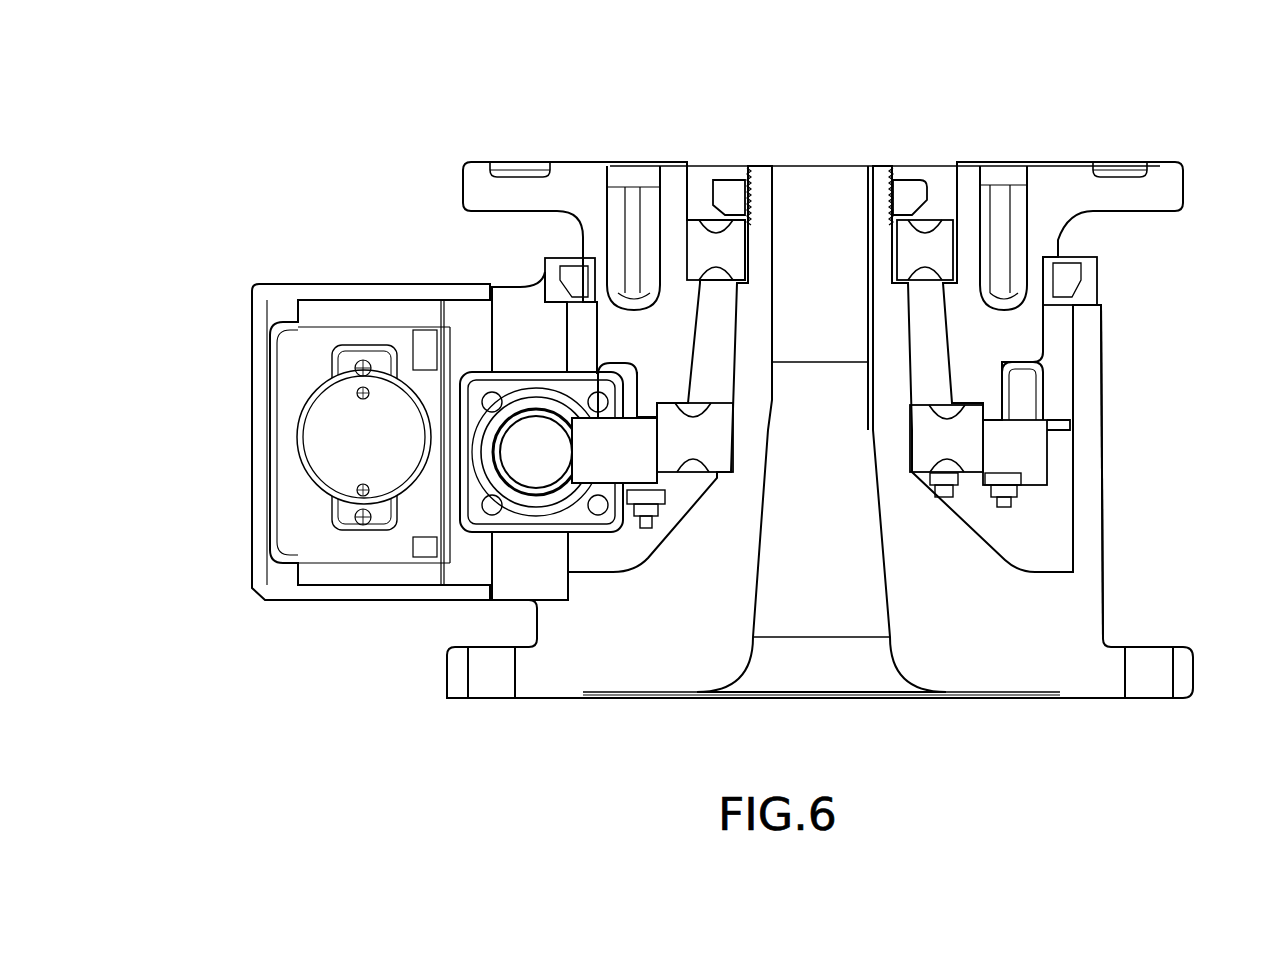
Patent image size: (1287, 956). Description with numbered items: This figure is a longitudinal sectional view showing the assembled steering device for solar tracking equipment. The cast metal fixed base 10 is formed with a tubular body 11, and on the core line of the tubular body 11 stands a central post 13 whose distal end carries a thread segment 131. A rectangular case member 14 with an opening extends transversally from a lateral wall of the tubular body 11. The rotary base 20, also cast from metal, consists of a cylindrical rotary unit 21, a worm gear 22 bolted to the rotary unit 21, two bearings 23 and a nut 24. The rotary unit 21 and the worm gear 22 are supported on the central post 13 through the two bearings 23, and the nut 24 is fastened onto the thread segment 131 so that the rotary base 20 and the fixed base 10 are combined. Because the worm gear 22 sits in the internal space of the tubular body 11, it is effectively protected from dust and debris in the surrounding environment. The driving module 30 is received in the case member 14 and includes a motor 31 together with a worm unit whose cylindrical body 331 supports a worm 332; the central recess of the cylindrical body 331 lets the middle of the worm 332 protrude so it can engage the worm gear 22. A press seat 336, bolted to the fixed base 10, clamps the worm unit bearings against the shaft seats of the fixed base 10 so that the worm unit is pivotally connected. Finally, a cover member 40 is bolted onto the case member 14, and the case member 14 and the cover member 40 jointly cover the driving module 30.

The fixed base 10 is at (1105, 556).
The tubular body 11 is at (1092, 489).
The central post 13 is at (764, 311).
The thread segment 131 is at (775, 195).
The case member 14 is at (520, 560).
The rotary base 20 is at (1165, 160).
The rotary unit 21 is at (967, 180).
The worm gear 22 is at (580, 432).
The bearing 23 is at (932, 250).
The nut 24 is at (902, 192).
The driving module 30 is at (420, 324).
The motor 31 is at (327, 447).
The cylindrical body 331 is at (492, 432).
The worm 332 is at (522, 462).
The press seat 336 is at (459, 347).
The cover member 40 is at (268, 309).